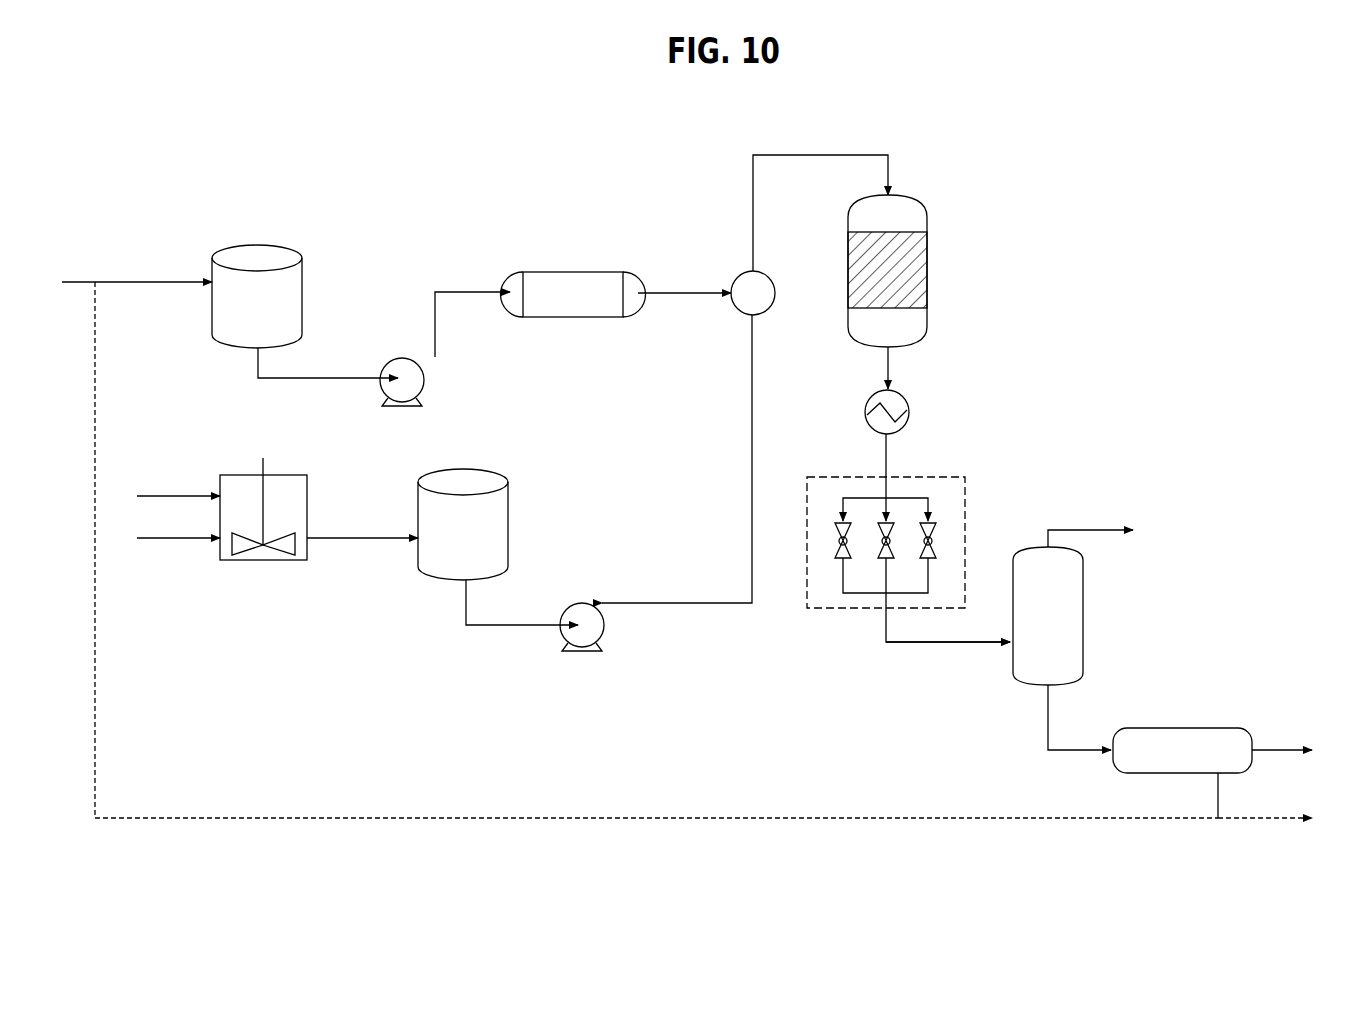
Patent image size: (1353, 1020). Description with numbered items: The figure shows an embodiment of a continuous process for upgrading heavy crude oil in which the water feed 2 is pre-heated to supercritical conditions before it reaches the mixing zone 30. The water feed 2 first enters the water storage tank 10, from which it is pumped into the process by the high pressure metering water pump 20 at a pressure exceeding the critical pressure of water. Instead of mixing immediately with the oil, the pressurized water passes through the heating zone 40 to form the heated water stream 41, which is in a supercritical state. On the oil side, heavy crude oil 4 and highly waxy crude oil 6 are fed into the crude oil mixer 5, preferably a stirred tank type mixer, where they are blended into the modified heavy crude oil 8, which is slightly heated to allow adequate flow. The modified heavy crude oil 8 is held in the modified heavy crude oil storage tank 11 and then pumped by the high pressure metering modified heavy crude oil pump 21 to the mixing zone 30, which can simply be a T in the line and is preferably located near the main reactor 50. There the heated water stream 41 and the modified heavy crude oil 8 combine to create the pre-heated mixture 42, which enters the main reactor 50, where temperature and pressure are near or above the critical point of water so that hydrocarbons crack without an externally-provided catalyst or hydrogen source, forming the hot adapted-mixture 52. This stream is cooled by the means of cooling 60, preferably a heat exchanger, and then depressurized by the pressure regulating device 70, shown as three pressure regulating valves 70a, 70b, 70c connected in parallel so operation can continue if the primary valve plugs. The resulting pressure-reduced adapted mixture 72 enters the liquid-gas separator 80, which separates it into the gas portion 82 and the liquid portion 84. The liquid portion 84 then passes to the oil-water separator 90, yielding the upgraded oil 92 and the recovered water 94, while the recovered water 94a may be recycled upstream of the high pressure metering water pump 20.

The water feed 2 is at (175, 280).
The water storage tank 10 is at (257, 296).
The high pressure metering water pump 20 is at (405, 358).
The heating zone 40 is at (573, 294).
The heated water stream 41 is at (720, 292).
The mixing zone 30 is at (753, 293).
The pre-heated mixture 42 is at (840, 155).
The main reactor 50 is at (887, 271).
The hot adapted-mixture 52 is at (878, 372).
The means of cooling 60 is at (905, 395).
The pressure regulating device 70 is at (953, 478).
The pressure regulating valve 70a is at (833, 530).
The pressure regulating valve 70b is at (870, 548).
The pressure regulating valve 70c is at (938, 530).
The pressure-reduced adapted mixture 72 is at (965, 645).
The liquid-gas separator 80 is at (1048, 616).
The gas portion 82 is at (1115, 530).
The liquid portion 84 is at (1045, 698).
The oil-water separator 90 is at (1182, 750).
The upgraded oil 92 is at (1265, 748).
The recovered water 94 is at (1240, 818).
The recovered water 94a is at (688, 818).
The heavy crude oil 4 is at (195, 495).
The highly waxy crude oil 6 is at (195, 538).
The crude oil mixer 5 is at (285, 475).
The modified heavy crude oil 8 is at (380, 538).
The modified heavy crude oil storage tank 11 is at (463, 524).
The high pressure metering modified heavy crude oil pump 21 is at (562, 640).